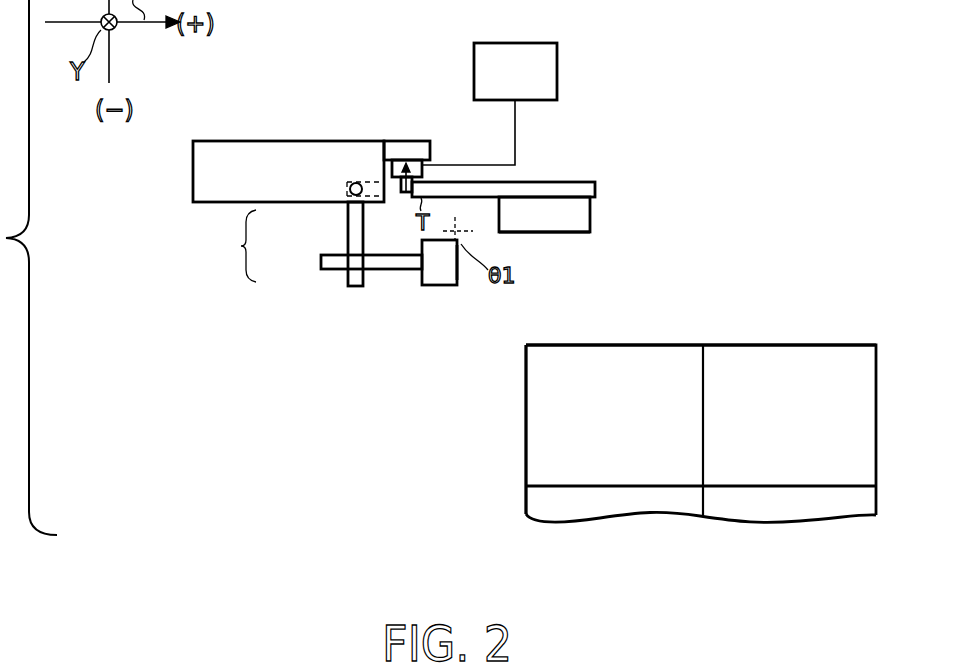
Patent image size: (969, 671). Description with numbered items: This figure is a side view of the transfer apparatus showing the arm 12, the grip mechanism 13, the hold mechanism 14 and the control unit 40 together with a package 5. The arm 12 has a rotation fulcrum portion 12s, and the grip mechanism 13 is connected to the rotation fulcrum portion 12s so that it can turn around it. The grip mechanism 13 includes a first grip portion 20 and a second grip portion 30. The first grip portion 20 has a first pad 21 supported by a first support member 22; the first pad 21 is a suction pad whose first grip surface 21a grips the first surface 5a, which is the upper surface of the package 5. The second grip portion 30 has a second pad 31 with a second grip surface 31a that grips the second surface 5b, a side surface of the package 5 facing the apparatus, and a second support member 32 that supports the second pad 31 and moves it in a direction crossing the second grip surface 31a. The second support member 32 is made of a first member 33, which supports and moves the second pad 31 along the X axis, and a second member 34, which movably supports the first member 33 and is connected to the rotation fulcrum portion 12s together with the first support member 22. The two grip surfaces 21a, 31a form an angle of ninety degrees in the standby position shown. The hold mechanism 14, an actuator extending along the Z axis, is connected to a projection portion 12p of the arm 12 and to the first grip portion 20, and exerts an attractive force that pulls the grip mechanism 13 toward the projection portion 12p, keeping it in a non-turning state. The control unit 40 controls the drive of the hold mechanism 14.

The package 5 is at (657, 423).
The first surface 5a is at (655, 344).
The second surface 5b is at (525, 432).
The arm 12 is at (196, 171).
The rotation fulcrum portion 12s is at (357, 182).
The projection portion 12p is at (407, 150).
The grip mechanism 13 is at (591, 166).
The hold mechanism 14 is at (449, 138).
The first grip portion 20 is at (603, 203).
The first pad 21 is at (588, 217).
The first grip surface 21a is at (552, 234).
The first support member 22 is at (552, 182).
The second grip portion 30 is at (342, 291).
The second pad 31 is at (440, 286).
The second grip surface 31a is at (460, 275).
The second support member 32 is at (317, 244).
The first member 33 is at (320, 262).
The second member 34 is at (350, 224).
The control unit 40 is at (559, 70).